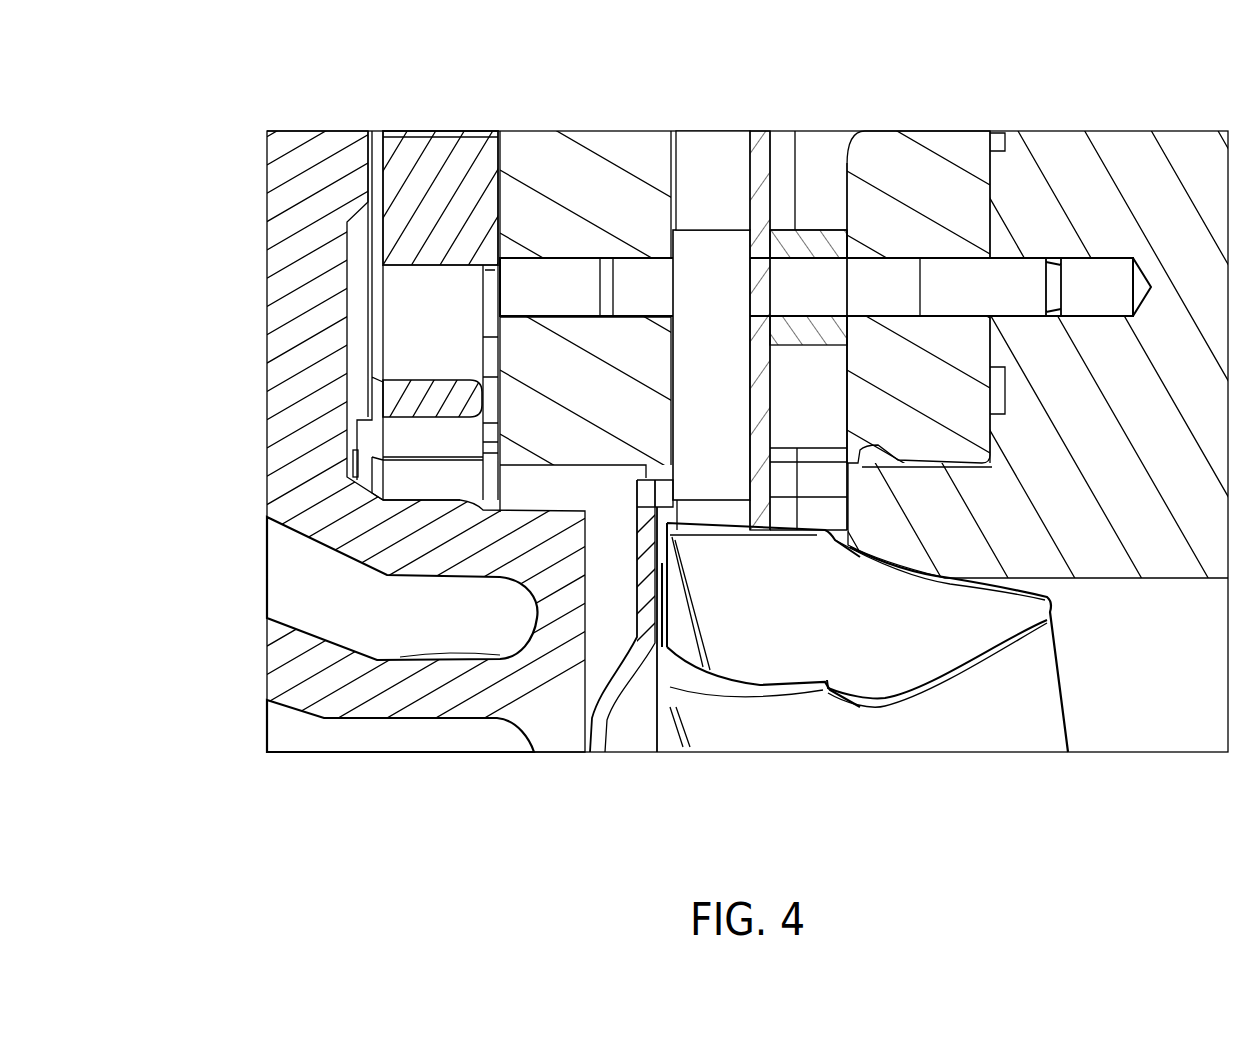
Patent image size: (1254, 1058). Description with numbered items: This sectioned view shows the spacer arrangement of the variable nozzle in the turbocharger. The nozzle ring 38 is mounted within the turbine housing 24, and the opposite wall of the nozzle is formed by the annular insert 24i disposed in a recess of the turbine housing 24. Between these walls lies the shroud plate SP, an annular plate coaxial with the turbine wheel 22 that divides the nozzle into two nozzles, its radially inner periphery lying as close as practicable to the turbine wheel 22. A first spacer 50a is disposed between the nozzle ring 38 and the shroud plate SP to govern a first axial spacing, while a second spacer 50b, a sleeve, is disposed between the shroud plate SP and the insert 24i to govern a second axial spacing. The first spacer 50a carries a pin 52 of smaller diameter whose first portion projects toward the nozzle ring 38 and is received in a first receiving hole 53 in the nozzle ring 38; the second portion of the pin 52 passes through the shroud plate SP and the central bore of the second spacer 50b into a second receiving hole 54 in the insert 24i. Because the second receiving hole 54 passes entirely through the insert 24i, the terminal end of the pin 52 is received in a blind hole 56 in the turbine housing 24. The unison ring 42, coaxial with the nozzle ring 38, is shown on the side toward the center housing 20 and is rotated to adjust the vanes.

The center housing 20 is at (283, 280).
The turbine wheel 22 is at (958, 620).
The turbine housing 24 is at (1137, 153).
The annular insert 24i is at (883, 140).
The nozzle ring 38 is at (578, 182).
The unison ring 42 is at (442, 178).
The first spacer 50a is at (714, 243).
The second spacer 50b is at (812, 330).
The shroud plate SP is at (757, 178).
The pin 52 is at (646, 312).
The first receiving hole 53 is at (561, 312).
The second receiving hole 54 is at (945, 290).
The blind hole 56 is at (1098, 288).